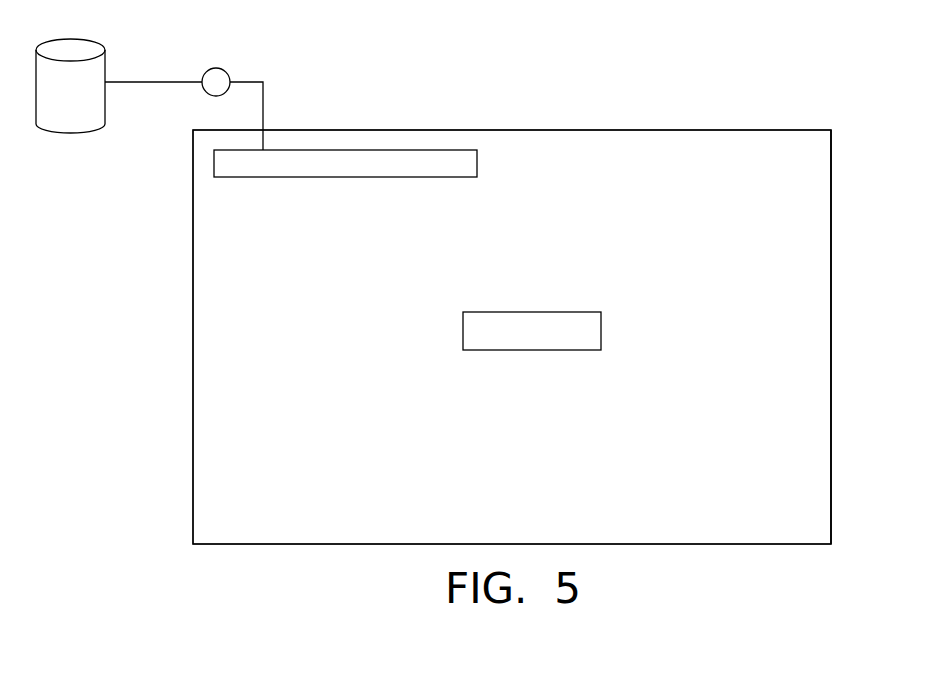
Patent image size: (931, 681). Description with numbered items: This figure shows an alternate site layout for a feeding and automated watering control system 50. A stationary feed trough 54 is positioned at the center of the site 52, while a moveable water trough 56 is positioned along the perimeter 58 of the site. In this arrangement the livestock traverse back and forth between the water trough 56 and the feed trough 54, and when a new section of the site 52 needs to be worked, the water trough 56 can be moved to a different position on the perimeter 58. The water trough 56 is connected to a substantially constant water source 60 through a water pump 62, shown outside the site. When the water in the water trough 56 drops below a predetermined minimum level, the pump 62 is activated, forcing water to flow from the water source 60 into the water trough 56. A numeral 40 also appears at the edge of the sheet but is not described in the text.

The cutting apparatus 40 is at (835, 8).
The feeding and automated watering control system 50 is at (160, 387).
The site 52 is at (672, 180).
The feed trough 54 is at (585, 335).
The water trough 56 is at (433, 157).
The perimeter 58 is at (831, 460).
The water source 60 is at (62, 113).
The water pump 62 is at (208, 78).